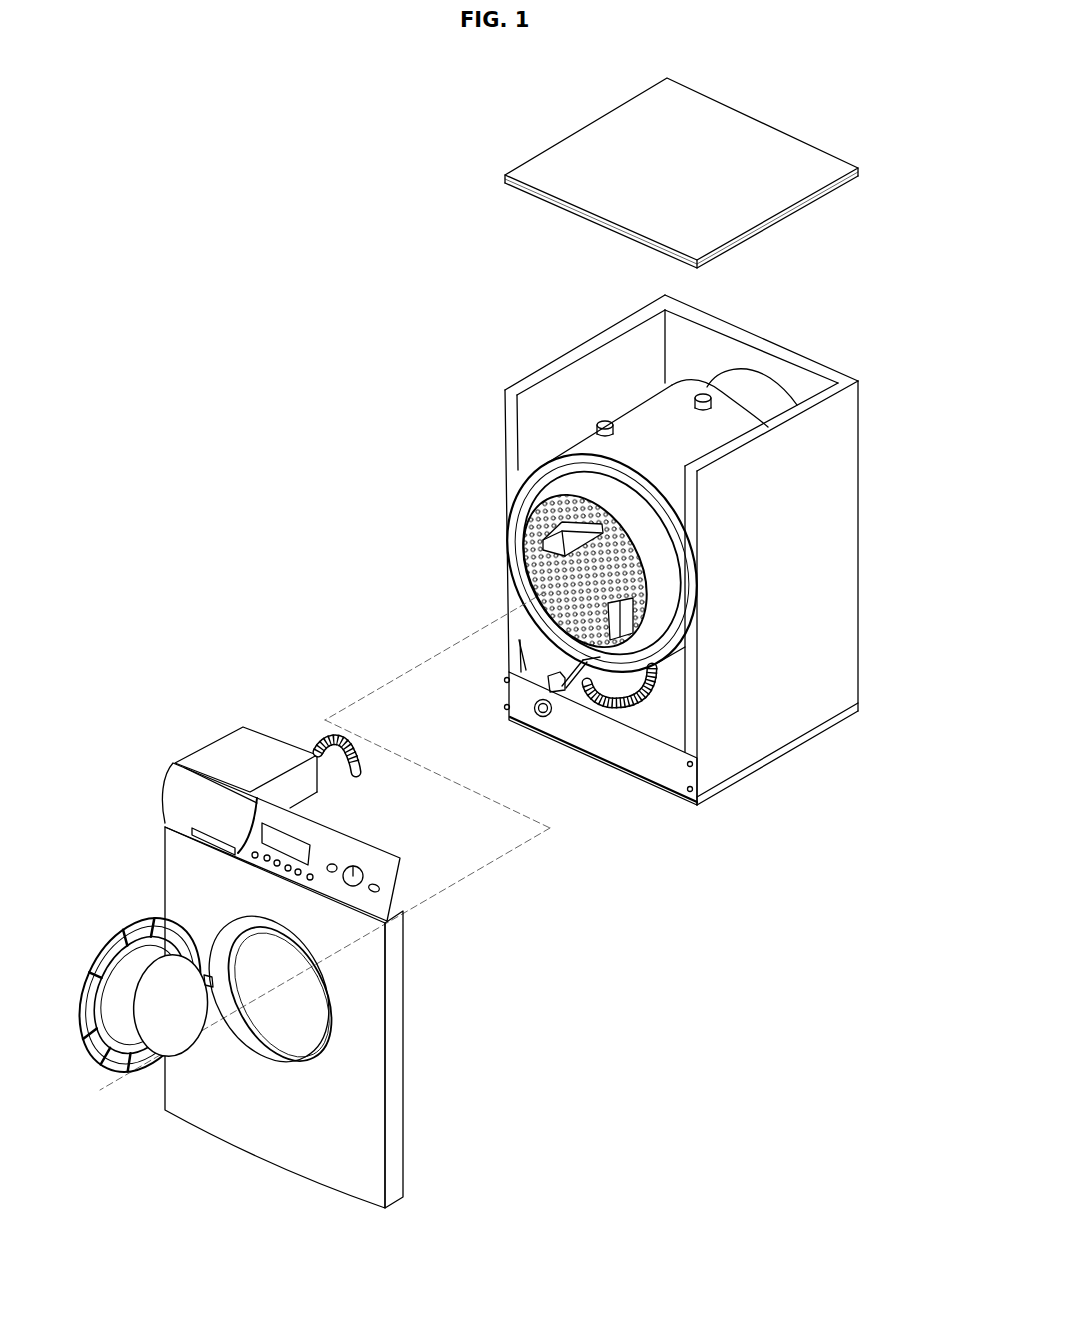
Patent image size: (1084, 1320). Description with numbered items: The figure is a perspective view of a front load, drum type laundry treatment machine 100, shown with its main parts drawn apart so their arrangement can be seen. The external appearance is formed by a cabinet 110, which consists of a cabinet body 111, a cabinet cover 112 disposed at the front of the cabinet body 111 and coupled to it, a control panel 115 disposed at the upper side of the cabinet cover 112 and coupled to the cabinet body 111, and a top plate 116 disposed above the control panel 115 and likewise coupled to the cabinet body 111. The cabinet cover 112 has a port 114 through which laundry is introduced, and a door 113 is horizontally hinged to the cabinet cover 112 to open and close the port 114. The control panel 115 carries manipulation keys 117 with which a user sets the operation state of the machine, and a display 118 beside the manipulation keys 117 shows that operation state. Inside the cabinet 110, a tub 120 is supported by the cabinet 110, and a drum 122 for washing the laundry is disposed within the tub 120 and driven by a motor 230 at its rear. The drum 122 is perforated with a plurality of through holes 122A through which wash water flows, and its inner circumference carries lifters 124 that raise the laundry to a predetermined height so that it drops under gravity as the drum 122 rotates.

The laundry treatment machine 100 is at (332, 223).
The cabinet 110 is at (787, 788).
The cabinet body 111 is at (838, 527).
The cabinet cover 112 is at (348, 1168).
The door 113 is at (173, 993).
The port 114 is at (302, 985).
The control panel 115 is at (395, 893).
The top plate 116 is at (738, 132).
The manipulation keys 117 is at (357, 877).
The display 118 is at (288, 847).
The tub 120 is at (662, 650).
The drum 122 is at (578, 543).
The through holes 122A is at (533, 562).
The lifters 124 is at (565, 538).
The motor 230 is at (757, 395).